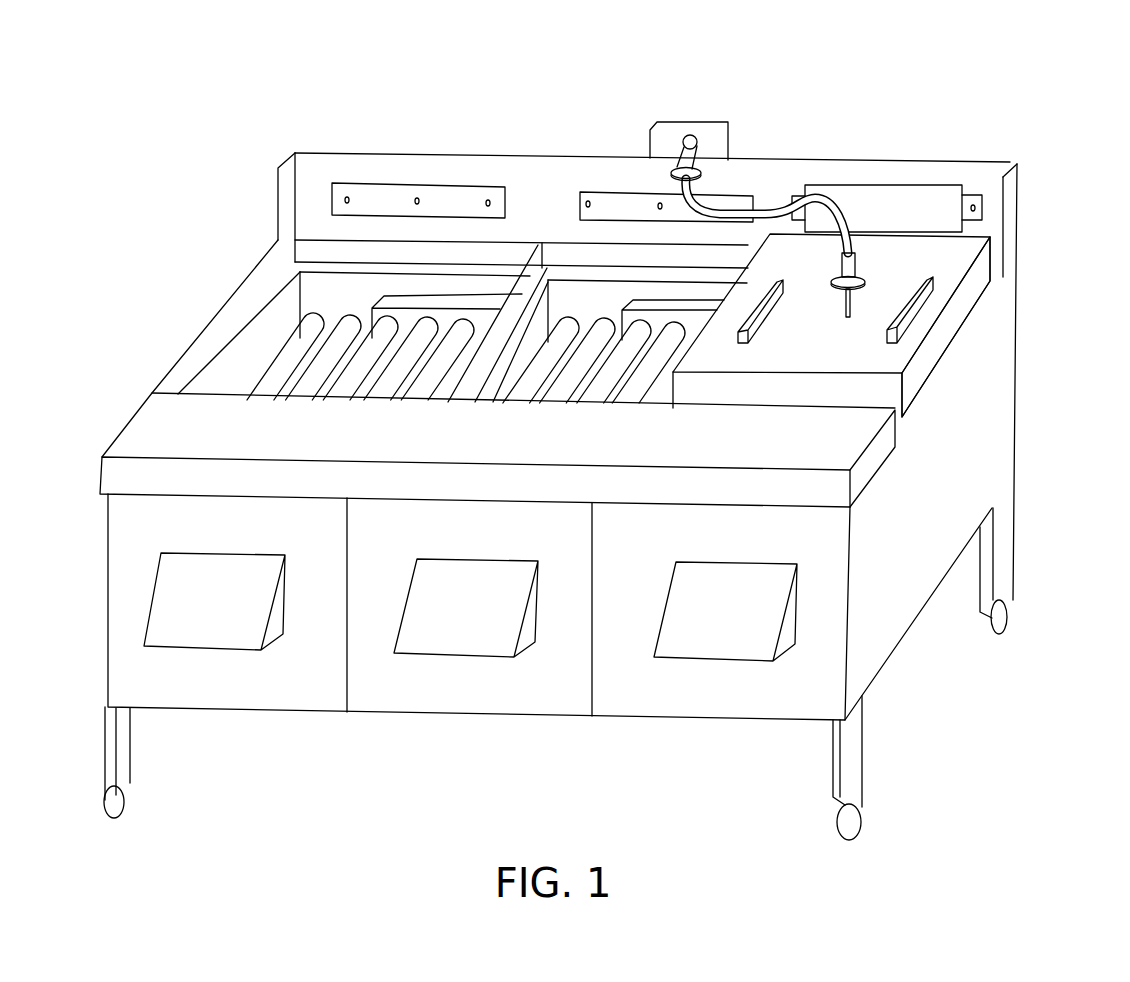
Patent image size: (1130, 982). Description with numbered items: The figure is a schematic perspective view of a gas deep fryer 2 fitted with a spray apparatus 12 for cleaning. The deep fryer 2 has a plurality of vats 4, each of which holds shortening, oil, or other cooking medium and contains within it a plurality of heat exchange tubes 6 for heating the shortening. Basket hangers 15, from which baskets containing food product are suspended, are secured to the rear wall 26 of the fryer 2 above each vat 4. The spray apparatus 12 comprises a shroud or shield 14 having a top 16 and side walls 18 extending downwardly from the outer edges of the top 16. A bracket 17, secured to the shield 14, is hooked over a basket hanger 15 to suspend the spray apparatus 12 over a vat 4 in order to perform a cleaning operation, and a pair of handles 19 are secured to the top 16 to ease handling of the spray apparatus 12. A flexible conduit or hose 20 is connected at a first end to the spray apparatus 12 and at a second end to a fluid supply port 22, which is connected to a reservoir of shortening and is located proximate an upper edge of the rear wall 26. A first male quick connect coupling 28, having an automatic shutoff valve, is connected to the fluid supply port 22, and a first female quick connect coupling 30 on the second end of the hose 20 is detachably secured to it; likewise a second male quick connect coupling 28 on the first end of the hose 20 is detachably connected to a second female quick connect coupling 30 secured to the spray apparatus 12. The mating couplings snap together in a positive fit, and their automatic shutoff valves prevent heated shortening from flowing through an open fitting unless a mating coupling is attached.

The deep fryer 2 is at (1072, 78).
The vat 4 is at (245, 356).
The heat exchange tube 6 is at (531, 377).
The spray apparatus 12 is at (1042, 256).
The shroud or shield 14 is at (940, 205).
The basket hanger 15 is at (453, 184).
The top 16 is at (833, 358).
The bracket 17 is at (862, 200).
The side wall 18 is at (922, 368).
The handle 19 is at (915, 292).
The flexible conduit or hose 20 is at (777, 203).
The fluid supply port 22 is at (692, 136).
The rear wall 26 is at (527, 208).
The male quick connect coupling 28 is at (699, 157).
The female quick connect coupling 30 is at (670, 170).